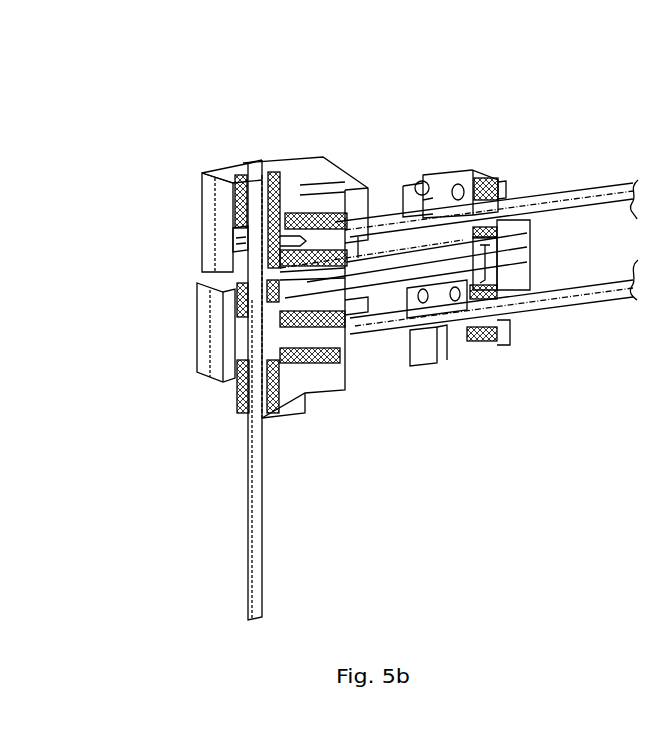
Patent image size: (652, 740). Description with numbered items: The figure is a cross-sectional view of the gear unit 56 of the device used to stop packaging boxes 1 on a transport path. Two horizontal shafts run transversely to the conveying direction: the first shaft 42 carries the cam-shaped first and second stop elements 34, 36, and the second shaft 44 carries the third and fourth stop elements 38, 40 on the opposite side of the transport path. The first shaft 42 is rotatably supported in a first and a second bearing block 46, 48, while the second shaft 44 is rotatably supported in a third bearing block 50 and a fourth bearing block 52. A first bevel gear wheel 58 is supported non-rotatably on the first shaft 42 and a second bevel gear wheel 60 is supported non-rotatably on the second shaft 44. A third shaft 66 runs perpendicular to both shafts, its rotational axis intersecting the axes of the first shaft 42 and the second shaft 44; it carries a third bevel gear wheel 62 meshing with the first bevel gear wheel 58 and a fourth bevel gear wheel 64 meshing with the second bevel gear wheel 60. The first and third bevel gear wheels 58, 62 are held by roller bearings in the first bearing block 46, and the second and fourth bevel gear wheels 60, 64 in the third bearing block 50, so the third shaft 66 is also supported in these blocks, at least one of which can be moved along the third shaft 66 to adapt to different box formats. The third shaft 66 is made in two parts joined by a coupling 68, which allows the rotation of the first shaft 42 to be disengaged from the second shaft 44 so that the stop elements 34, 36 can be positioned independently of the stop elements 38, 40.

The packaging box 1 is at (393, 272).
The first stop element 34 is at (350, 317).
The second stop element 36 is at (463, 290).
The third stop element 38 is at (350, 247).
The fourth stop element 40 is at (463, 237).
The first shaft 42 is at (620, 292).
The second shaft 44 is at (567, 193).
The first bearing block 46 is at (218, 385).
The second bearing block 48 is at (497, 338).
The third bearing block 50 is at (208, 192).
The bolt 52 is at (493, 182).
The gear unit 56 is at (247, 124).
The first bevel gear wheel 58 is at (280, 355).
The second bevel gear wheel 60 is at (277, 230).
The third bevel gear wheel 62 is at (243, 363).
The fourth bevel gear wheel 64 is at (244, 230).
The third shaft 66 is at (248, 530).
The coupling 68 is at (243, 312).